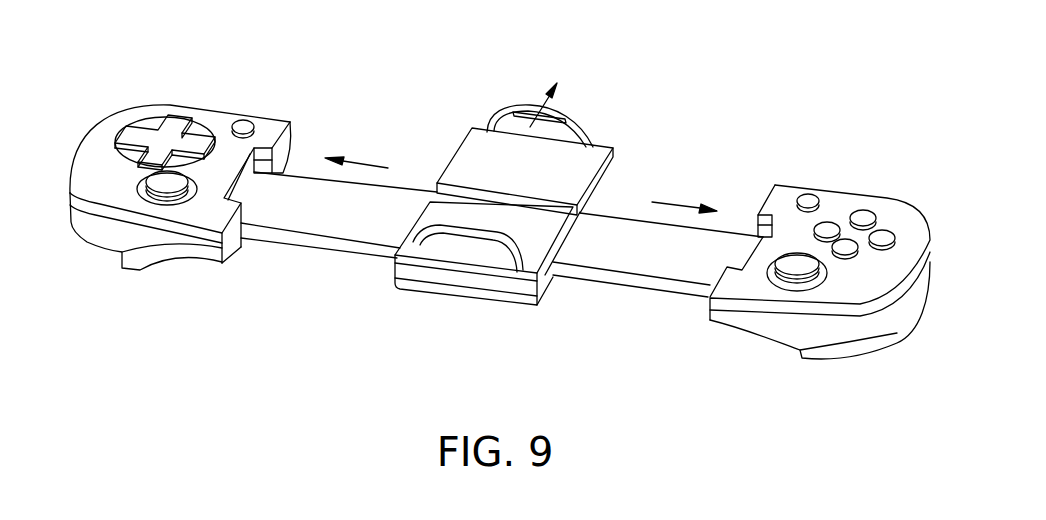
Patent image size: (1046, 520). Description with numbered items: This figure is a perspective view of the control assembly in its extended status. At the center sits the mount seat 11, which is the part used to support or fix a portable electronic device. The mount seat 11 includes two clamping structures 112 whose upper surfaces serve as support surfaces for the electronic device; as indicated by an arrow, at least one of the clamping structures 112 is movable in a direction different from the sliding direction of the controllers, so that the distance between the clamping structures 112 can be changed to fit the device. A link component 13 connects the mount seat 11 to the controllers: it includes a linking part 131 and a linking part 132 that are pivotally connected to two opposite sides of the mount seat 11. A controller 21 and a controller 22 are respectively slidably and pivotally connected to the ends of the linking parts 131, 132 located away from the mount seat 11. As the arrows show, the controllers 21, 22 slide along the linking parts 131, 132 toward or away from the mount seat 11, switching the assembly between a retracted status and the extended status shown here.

The mount seat 11 is at (502, 225).
The clamping structure 112 is at (480, 160).
The link component 13 is at (502, 220).
The linking part 131 is at (343, 213).
The linking part 132 is at (627, 243).
The controller 21 is at (220, 122).
The controller 22 is at (840, 208).